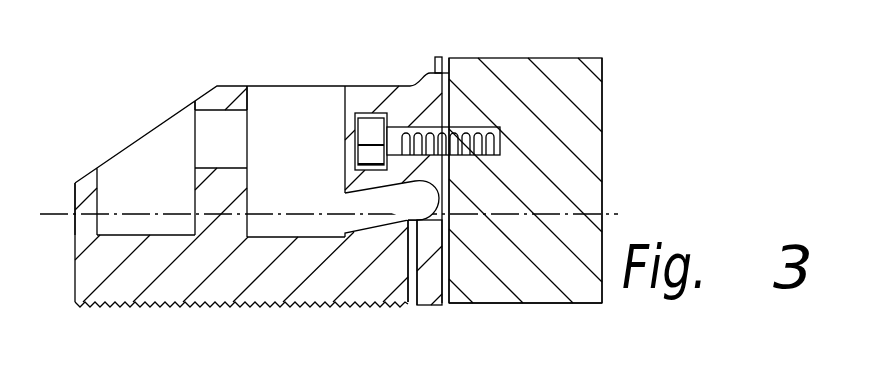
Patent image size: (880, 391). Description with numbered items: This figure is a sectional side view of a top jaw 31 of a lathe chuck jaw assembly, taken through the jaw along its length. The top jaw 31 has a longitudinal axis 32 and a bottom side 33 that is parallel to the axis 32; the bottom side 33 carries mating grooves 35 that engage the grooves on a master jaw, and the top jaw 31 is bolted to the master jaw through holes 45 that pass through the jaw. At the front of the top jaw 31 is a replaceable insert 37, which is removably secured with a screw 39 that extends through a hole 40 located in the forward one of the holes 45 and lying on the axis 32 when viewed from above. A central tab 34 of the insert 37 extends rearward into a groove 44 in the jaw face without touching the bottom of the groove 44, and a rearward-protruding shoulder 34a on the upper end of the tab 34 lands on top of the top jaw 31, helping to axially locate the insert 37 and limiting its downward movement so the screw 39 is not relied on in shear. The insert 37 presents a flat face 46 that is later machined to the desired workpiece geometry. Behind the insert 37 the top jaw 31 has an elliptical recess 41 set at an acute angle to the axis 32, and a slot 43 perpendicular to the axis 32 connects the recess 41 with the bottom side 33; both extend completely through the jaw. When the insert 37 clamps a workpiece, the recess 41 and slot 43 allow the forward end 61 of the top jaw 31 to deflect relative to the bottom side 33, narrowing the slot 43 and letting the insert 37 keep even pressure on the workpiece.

The top jaw 31 is at (157, 98).
The longitudinal axis 32 is at (618, 215).
The bottom side 33 is at (228, 319).
The central tab 34 is at (438, 57).
The rearward-protruding shoulder 34a is at (434, 63).
The mating grooves 35 is at (170, 307).
The replaceable insert 37 is at (588, 84).
The screw 39 is at (471, 127).
The hole 40 is at (405, 127).
The elliptical recess 41 is at (422, 198).
The slot 43 is at (411, 304).
The groove 44 is at (450, 283).
The holes 45 is at (250, 95).
The flat face 46 is at (602, 143).
The forward end 61 is at (430, 297).